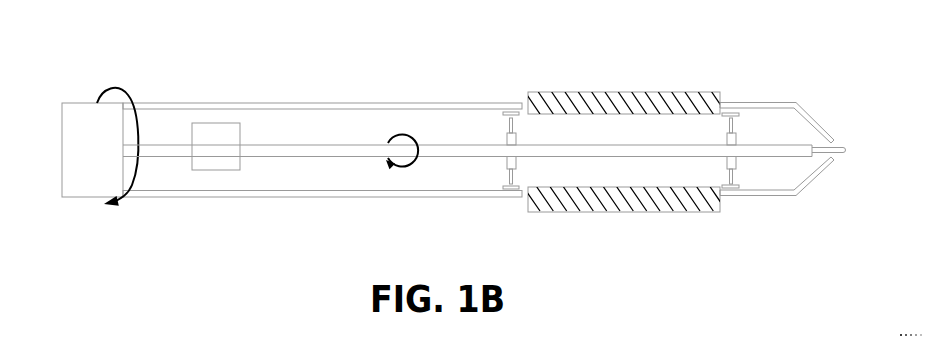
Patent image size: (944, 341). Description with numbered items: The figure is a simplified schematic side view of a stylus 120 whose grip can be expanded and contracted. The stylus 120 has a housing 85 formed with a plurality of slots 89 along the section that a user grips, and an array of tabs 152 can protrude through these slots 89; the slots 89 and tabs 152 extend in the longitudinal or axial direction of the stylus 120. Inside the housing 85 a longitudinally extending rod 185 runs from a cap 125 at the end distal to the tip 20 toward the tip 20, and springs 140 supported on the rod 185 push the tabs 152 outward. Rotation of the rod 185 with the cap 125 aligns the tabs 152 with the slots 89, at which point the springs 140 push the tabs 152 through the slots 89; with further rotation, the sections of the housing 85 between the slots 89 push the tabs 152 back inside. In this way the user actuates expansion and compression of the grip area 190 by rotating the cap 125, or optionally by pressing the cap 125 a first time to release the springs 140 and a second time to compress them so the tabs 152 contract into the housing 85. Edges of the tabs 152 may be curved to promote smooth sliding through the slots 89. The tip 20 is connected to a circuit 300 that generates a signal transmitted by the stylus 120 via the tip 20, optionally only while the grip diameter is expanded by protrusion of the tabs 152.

The tip 20 is at (837, 147).
The housing 85 is at (260, 103).
The slots 89 is at (731, 88).
The stylus 120 is at (332, 53).
The cap 125 is at (87, 103).
The springs 140 is at (506, 140).
The tabs 152 is at (656, 107).
The rod 185 is at (311, 157).
The grip area 190 is at (552, 59).
The circuit 300 is at (215, 170).